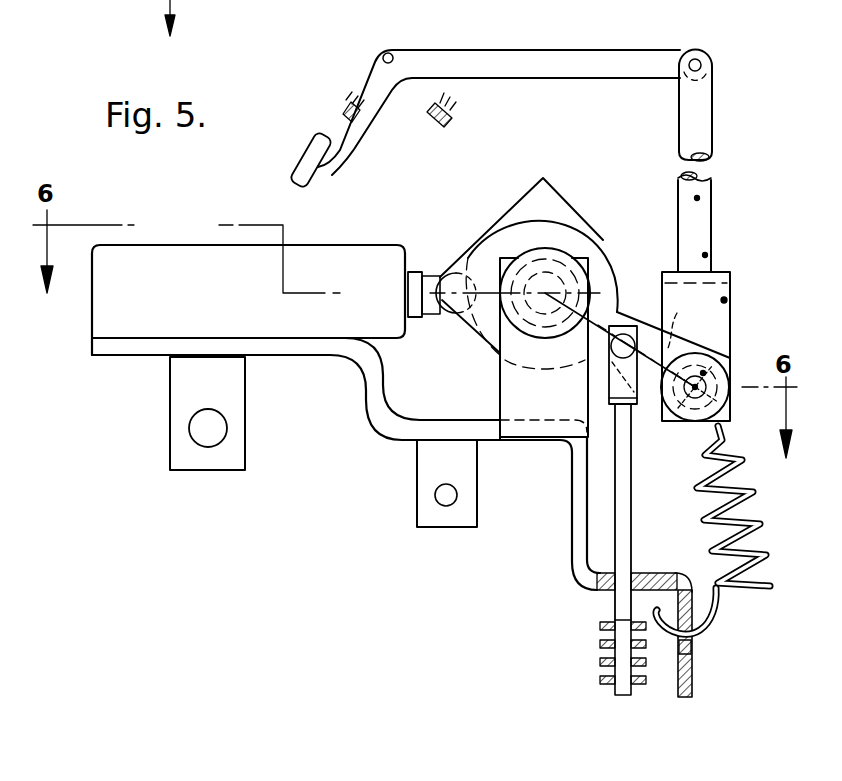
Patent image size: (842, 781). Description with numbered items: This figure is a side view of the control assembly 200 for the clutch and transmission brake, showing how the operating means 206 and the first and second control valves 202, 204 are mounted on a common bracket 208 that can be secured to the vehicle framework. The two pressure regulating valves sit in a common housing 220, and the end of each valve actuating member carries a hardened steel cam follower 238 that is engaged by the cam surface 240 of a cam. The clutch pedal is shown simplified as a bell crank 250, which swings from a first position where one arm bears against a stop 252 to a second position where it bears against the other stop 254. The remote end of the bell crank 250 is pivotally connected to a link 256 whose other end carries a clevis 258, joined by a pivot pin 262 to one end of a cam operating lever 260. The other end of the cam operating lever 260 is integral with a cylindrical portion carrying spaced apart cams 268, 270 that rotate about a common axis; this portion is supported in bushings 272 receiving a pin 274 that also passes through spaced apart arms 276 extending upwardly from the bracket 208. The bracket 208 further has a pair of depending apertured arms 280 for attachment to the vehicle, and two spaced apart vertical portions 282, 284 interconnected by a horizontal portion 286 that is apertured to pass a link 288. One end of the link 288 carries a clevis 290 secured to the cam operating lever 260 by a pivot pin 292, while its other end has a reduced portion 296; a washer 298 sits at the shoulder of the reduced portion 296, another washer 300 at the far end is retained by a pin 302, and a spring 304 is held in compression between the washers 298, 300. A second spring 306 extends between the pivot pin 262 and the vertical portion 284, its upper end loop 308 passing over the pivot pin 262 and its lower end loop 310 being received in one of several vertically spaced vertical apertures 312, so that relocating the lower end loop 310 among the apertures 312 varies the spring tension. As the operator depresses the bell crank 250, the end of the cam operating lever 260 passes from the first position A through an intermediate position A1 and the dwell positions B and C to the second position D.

The control assembly 200 is at (222, 507).
The first control valve 202 is at (406, 248).
The second control valve 204 is at (525, 195).
The operating means 206 is at (255, 153).
The bracket 208 is at (368, 414).
The housing 220 is at (206, 305).
The cam follower 238 is at (441, 274).
The cam surface 240 is at (460, 256).
The bell crank 250 is at (492, 48).
The stop 252 is at (357, 111).
The stop 254 is at (450, 125).
The link 256 is at (712, 176).
The clevis 258 is at (727, 312).
The cam operating lever 260 is at (657, 378).
The pivot pin 262 is at (700, 353).
The cam 268 is at (443, 318).
The cam 270 is at (558, 197).
The bushings 272 is at (590, 297).
The pin 274 is at (577, 272).
The arms 276 is at (504, 377).
The depending apertured arms 280 is at (417, 503).
The vertical portion 282 is at (572, 502).
The vertical portion 284 is at (692, 666).
The horizontal portion 286 is at (651, 573).
The link 288 is at (630, 504).
The clevis 290 is at (612, 389).
The pivot pin 292 is at (618, 346).
The reduced portion 296 is at (584, 643).
The washer 298 is at (608, 626).
The washer 300 is at (609, 670).
The pin 302 is at (613, 690).
The spring 304 is at (608, 642).
The spring 306 is at (741, 517).
The upper end loop 308 is at (688, 321).
The lower end loop 310 is at (689, 629).
The vertical apertures 312 is at (692, 650).
The first position A is at (695, 387).
The intermediate position A1 is at (703, 373).
The dwell position B is at (724, 300).
The dwell position C is at (705, 255).
The second position D is at (697, 198).